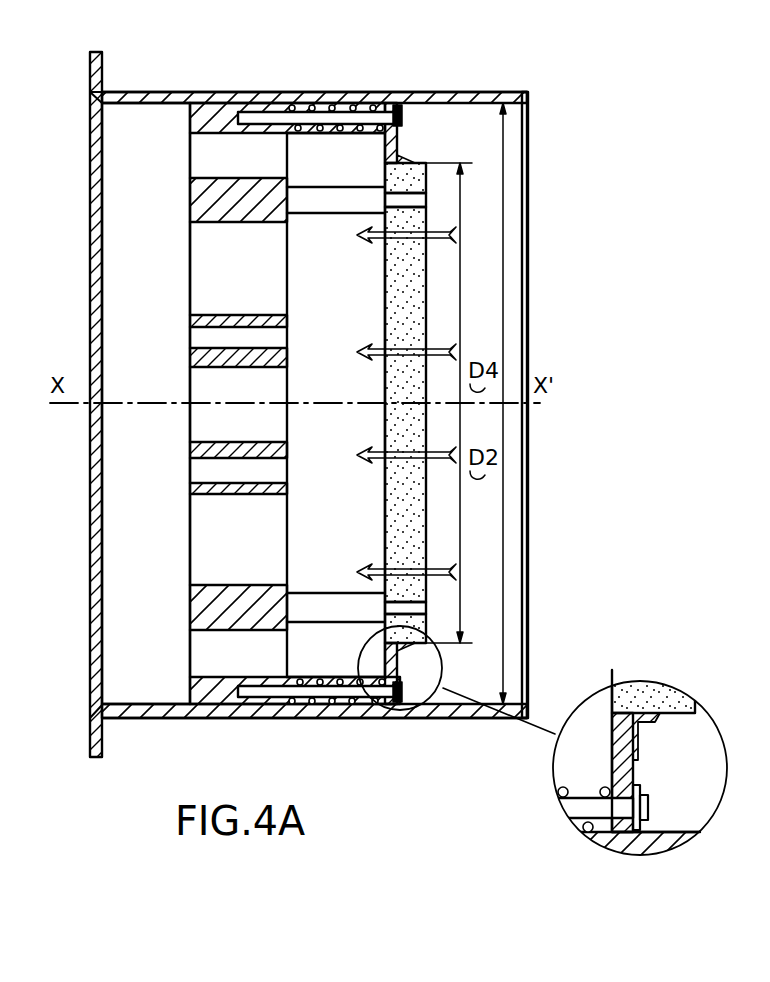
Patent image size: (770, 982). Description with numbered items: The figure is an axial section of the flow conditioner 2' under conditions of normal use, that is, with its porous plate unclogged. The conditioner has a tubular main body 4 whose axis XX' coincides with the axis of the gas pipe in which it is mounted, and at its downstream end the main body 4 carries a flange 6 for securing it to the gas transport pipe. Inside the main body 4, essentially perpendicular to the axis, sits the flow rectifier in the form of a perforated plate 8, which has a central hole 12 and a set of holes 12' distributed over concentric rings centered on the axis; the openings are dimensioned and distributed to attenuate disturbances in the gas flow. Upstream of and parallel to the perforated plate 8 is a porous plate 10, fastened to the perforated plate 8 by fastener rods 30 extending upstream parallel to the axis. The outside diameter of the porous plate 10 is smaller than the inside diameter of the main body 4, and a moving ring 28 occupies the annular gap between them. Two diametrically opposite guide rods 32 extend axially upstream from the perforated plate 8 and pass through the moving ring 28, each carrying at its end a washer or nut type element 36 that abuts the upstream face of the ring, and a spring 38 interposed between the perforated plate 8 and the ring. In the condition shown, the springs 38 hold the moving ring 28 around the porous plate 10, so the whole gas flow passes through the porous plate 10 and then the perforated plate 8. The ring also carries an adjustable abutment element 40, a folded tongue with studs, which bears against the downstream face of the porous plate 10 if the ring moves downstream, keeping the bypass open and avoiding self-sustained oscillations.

The flow conditioner 2' is at (314, 377).
The tubular main body 4 is at (145, 96).
The flange 6 is at (104, 56).
The perforated plate 8 is at (185, 200).
The porous plate 10 is at (390, 310).
The central hole 12 is at (210, 502).
The set of holes 12' is at (207, 404).
The moving ring 28 is at (385, 670).
The fastener rods 30 is at (322, 200).
The guide rod 32 is at (362, 110).
The washer or nut type element 36 is at (650, 826).
The spring 38 is at (312, 106).
The adjustable abutment element 40 is at (398, 158).